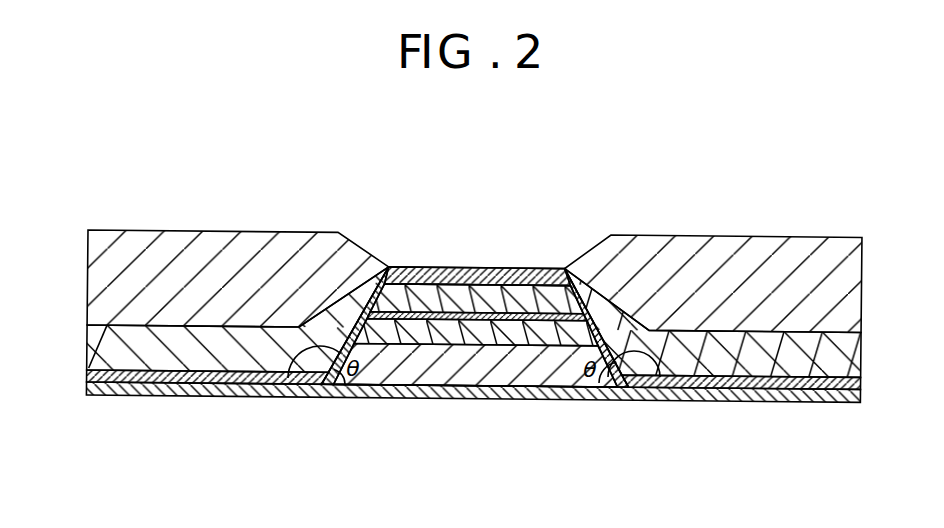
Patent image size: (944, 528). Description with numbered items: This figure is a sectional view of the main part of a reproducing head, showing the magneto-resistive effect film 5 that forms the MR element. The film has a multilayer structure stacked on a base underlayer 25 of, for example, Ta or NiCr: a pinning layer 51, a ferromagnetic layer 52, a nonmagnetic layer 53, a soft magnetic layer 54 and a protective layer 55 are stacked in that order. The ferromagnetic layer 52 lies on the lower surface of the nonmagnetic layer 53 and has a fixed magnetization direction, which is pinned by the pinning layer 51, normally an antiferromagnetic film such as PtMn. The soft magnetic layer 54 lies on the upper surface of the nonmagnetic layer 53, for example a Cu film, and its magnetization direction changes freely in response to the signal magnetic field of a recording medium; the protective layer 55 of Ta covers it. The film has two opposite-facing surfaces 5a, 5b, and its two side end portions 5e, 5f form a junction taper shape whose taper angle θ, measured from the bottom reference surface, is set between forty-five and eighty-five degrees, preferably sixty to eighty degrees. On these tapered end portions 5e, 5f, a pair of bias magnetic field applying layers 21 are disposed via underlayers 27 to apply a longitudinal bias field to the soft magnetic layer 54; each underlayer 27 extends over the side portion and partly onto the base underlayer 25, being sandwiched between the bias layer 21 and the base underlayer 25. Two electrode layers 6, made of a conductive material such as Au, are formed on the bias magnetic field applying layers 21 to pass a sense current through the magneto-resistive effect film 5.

The magneto-resistive effect film 5 is at (531, 258).
The surface 5a is at (425, 270).
The surface 5b is at (433, 391).
The end portion 5e is at (356, 322).
The end portion 5f is at (602, 325).
The electrode layer 6 is at (168, 250).
The bias magnetic field applying layer 21 is at (118, 349).
The base underlayer 25 is at (811, 398).
The underlayer 27 is at (293, 374).
The pinning layer 51 is at (358, 374).
The ferromagnetic layer 52 is at (423, 332).
The nonmagnetic layer 53 is at (470, 318).
The soft magnetic layer 54 is at (518, 298).
The protective layer 55 is at (469, 282).